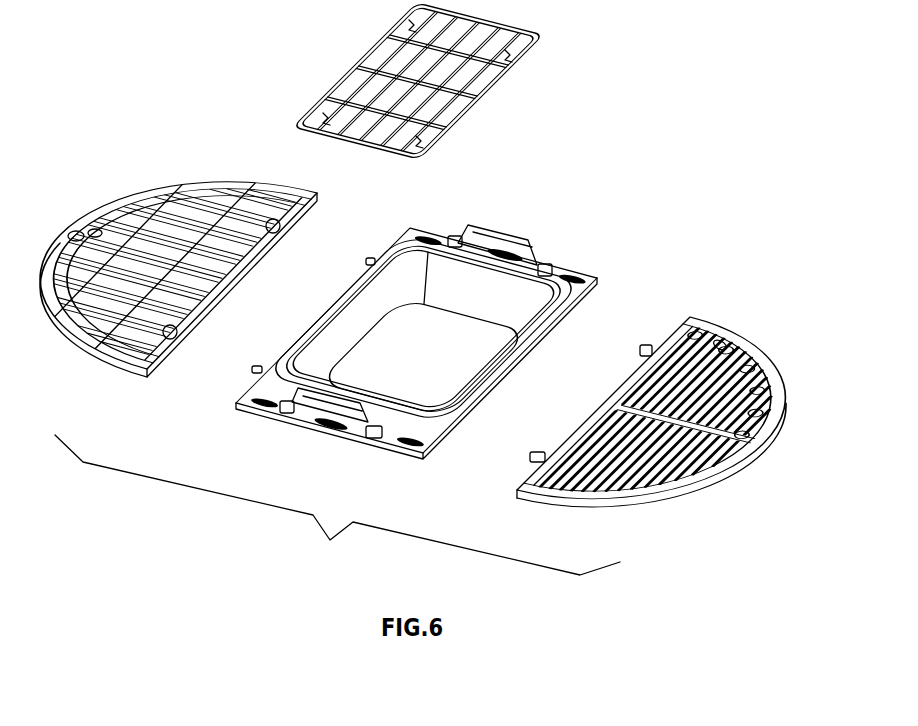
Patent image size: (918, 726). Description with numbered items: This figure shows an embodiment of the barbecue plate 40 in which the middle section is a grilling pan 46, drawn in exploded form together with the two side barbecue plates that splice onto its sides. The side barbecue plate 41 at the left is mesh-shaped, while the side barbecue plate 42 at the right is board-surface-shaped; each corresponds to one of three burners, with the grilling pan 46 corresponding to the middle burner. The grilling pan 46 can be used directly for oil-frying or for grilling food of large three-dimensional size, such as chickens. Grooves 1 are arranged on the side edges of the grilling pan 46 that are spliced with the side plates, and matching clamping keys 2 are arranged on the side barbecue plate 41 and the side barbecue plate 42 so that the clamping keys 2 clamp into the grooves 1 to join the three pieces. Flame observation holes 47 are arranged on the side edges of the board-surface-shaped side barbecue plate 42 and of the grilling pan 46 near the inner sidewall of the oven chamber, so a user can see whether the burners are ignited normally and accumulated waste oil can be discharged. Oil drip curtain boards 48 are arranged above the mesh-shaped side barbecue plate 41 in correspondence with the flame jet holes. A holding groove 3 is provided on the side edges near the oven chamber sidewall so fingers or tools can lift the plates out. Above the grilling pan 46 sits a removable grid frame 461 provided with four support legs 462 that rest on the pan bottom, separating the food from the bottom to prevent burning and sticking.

The groove 1 is at (565, 305).
The clamping key 2 is at (666, 427).
The holding groove 3 is at (72, 235).
The barbecue plate 40 is at (337, 506).
The side barbecue plate 41 is at (158, 268).
The side barbecue plate 42 is at (643, 385).
The grilling pan 46 is at (509, 321).
The flame observation hole 47 is at (432, 230).
The oil drip curtain board 48 is at (147, 258).
The grid frame 461 is at (429, 81).
The support leg 462 is at (512, 64).